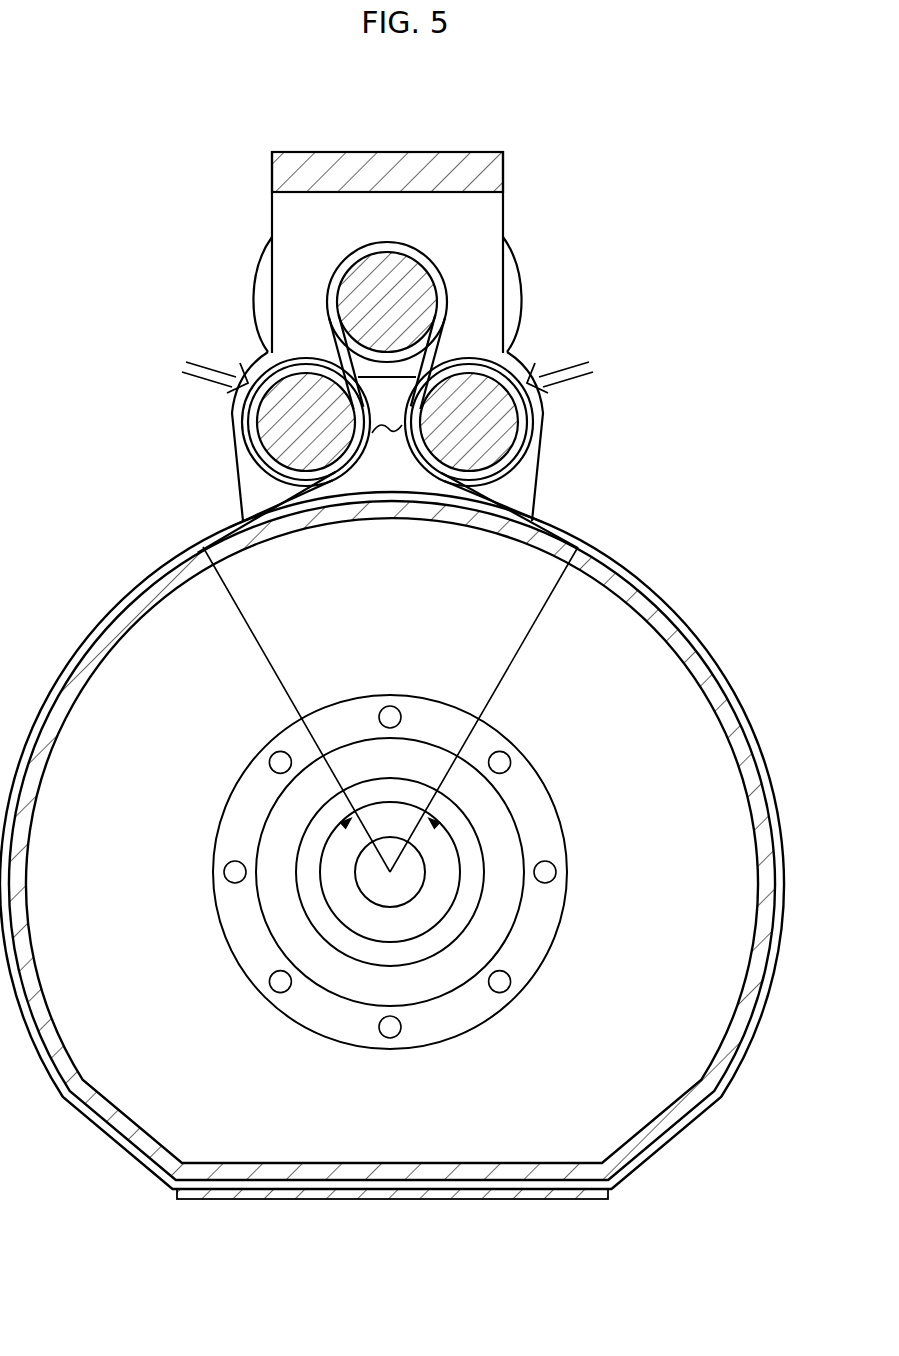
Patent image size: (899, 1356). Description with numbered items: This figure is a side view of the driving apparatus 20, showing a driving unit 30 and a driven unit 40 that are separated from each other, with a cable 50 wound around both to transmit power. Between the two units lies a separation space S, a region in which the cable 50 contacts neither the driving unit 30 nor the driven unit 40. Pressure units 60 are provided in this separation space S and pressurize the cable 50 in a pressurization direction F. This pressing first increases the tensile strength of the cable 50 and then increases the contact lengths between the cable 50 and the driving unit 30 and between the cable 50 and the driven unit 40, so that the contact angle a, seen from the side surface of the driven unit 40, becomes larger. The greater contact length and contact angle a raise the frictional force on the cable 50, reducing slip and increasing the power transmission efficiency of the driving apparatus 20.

The driving apparatus 20 is at (165, 131).
The driving unit 30 is at (418, 327).
The driven unit 40 is at (745, 705).
The cable 50 is at (632, 583).
The pressure units 60 is at (503, 435).
The separation space S is at (385, 420).
The pressurization direction F is at (387, 371).
The contact angle a is at (390, 798).